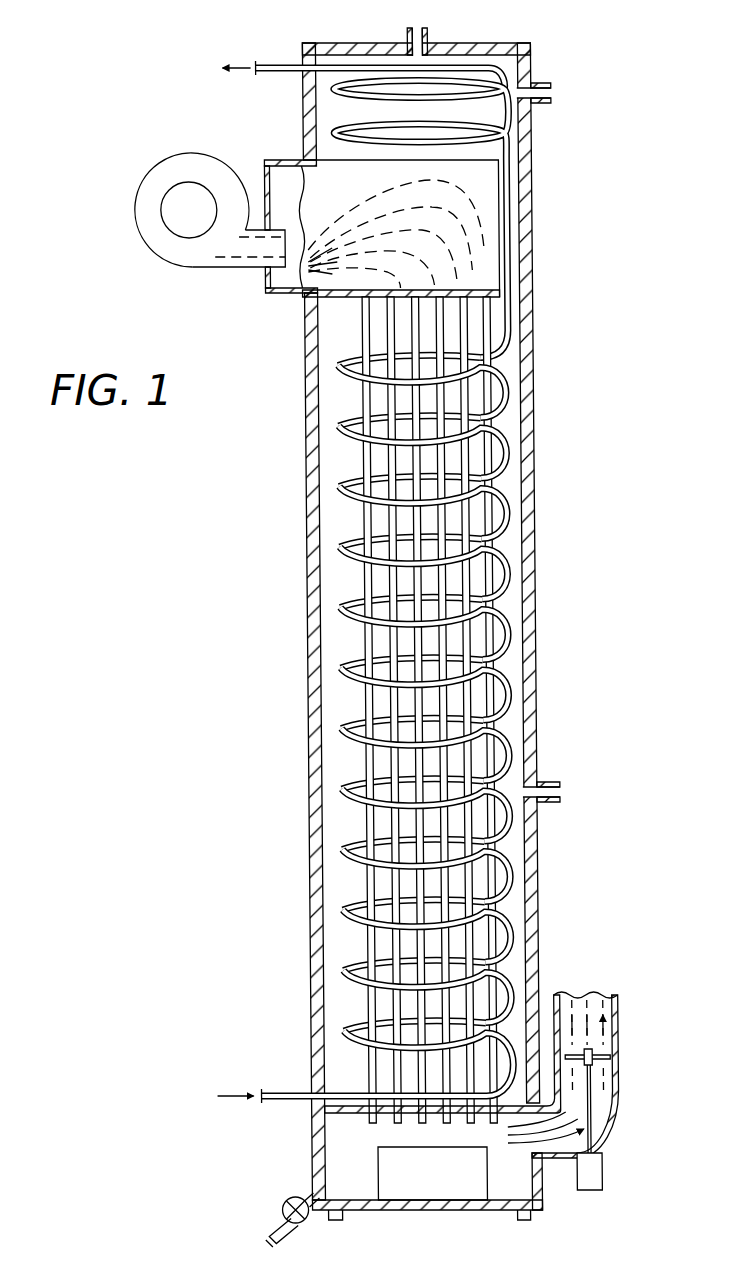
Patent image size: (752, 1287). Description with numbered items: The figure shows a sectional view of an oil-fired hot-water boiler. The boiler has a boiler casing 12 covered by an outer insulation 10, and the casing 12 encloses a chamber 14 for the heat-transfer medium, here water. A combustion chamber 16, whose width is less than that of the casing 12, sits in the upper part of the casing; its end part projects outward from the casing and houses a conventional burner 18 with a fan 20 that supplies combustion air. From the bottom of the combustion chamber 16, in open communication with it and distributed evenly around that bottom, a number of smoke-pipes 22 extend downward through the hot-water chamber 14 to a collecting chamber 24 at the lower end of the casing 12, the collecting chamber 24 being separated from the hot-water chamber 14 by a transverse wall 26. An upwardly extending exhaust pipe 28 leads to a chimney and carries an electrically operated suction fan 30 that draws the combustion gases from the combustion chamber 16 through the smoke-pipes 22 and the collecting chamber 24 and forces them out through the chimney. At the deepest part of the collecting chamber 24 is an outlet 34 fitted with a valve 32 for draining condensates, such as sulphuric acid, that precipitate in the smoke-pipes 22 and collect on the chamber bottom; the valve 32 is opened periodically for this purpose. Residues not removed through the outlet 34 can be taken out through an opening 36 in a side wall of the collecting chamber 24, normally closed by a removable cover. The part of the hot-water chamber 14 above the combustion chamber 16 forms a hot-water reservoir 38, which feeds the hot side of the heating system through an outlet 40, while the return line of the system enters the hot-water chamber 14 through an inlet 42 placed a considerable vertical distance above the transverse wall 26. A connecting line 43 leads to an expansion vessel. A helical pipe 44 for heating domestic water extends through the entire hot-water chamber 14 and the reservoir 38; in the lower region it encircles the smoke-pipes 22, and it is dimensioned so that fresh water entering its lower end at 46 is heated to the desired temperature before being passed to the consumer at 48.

The outer insulation 10 is at (305, 470).
The boiler casing 12 is at (302, 628).
The chamber for heat-transfer medium 14 is at (322, 715).
The combustion chamber 16 is at (480, 190).
The burner 18 is at (262, 262).
The fan 20 is at (152, 238).
The smoke-pipes 22 is at (376, 794).
The collecting chamber 24 is at (343, 1187).
The transverse wall 26 is at (327, 1116).
The exhaust pipe 28 is at (580, 993).
The suction fan 30 is at (610, 1064).
The valve 32 is at (289, 1196).
The outlet 34 is at (262, 1215).
The opening 36 is at (467, 1187).
The hot-water reservoir 38 is at (363, 182).
The outlet 40 is at (540, 84).
The inlet 42 is at (553, 788).
The connecting line 43 is at (428, 35).
The helical pipe 44 is at (425, 710).
The fresh-water line connection 46 is at (284, 1093).
The consumer connection 48 is at (268, 63).